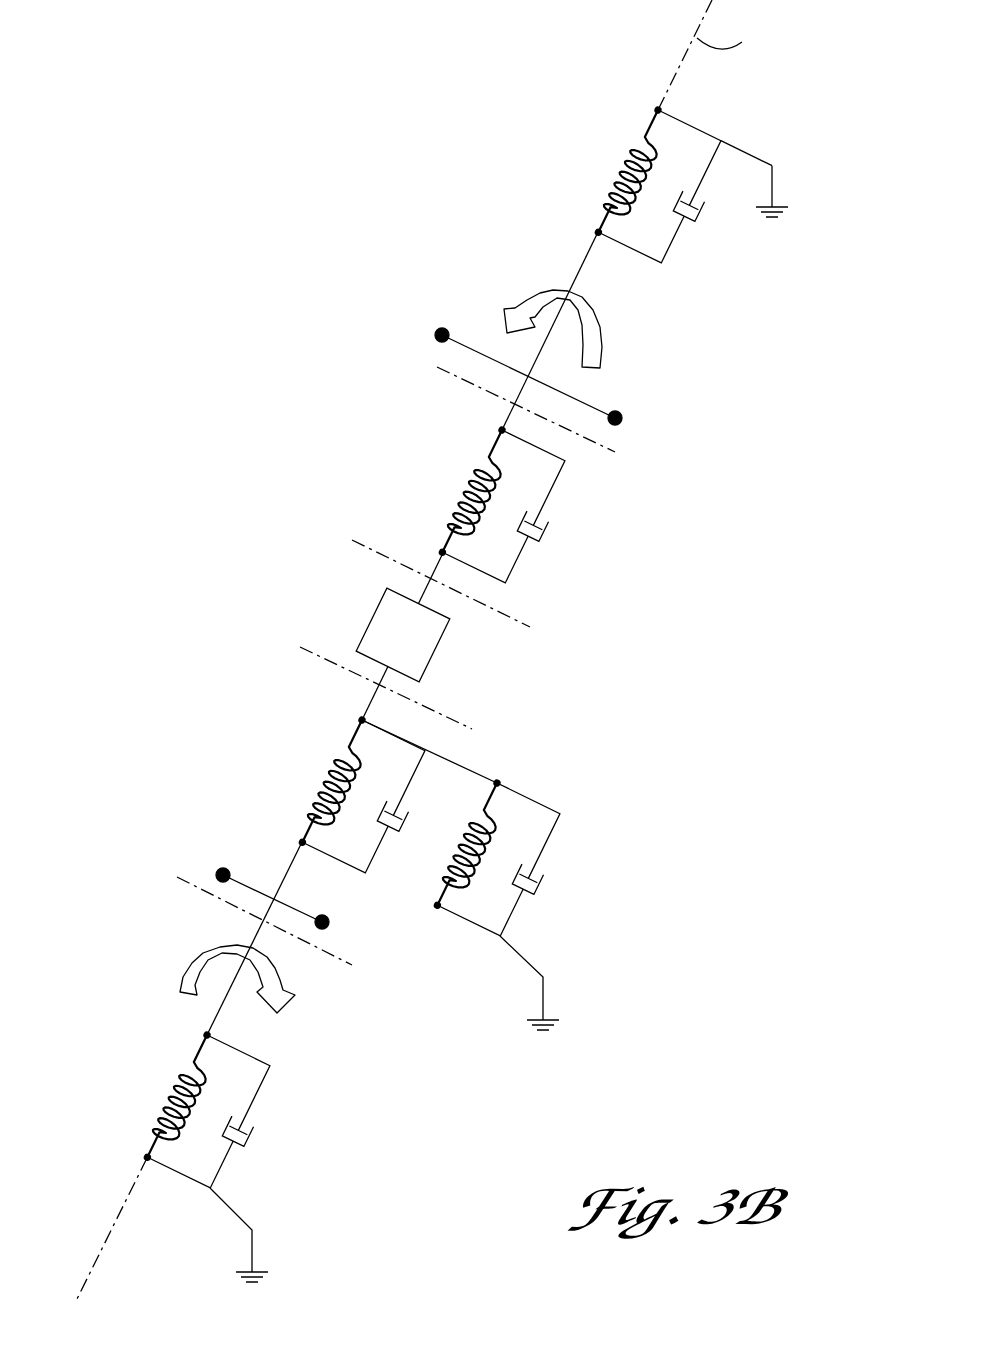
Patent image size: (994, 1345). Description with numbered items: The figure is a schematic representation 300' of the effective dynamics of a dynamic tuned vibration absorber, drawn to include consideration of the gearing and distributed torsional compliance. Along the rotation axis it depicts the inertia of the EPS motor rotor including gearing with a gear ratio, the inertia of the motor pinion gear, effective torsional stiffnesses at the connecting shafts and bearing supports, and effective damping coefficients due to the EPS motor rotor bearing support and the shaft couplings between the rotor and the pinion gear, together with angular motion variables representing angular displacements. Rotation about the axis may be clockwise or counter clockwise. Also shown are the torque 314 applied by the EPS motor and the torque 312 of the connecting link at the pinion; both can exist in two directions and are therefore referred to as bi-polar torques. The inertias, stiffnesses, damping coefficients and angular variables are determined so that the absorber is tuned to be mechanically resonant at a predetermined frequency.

The schematic representation 300' is at (431, 651).
The torque of the connecting link at the pinion 312 is at (195, 967).
The torque applied by the EPS motor 314 is at (603, 343).